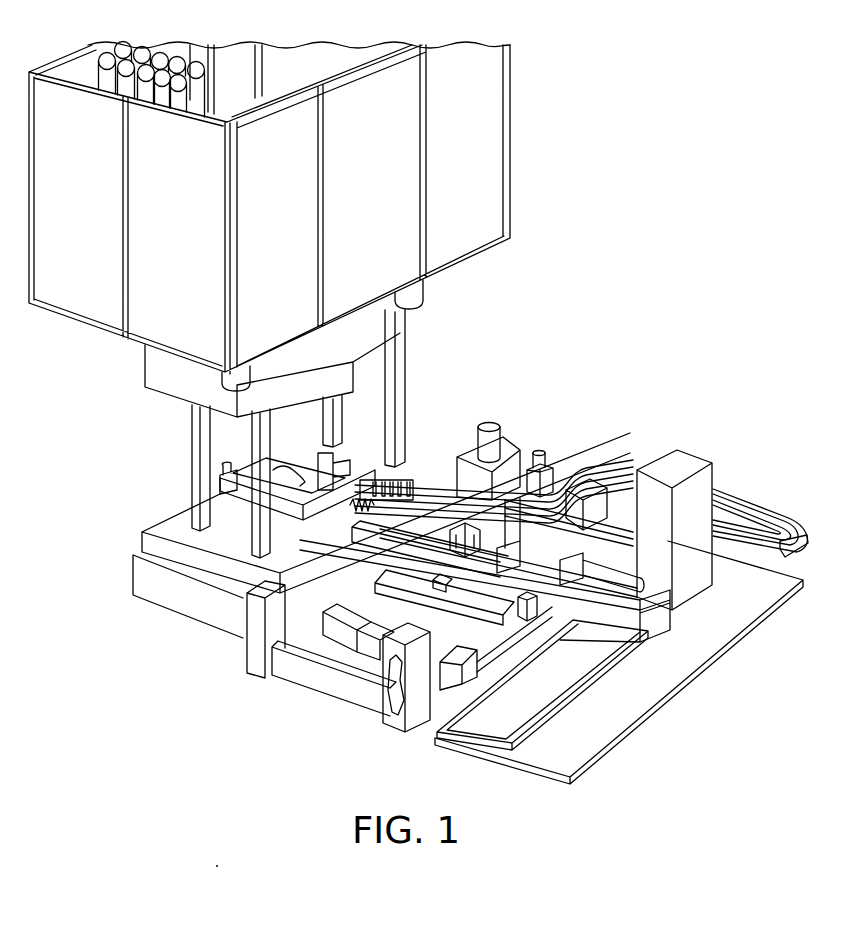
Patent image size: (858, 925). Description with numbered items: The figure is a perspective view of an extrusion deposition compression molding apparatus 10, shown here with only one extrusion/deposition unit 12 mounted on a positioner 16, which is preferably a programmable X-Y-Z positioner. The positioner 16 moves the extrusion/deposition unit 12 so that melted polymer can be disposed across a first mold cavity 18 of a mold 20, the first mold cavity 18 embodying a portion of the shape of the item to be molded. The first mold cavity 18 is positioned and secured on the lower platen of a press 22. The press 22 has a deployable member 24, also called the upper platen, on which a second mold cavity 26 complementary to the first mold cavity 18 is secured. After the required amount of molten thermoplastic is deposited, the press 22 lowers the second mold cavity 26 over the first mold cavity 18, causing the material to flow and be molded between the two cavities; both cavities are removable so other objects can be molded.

The extrusion deposition compression molding apparatus 10 is at (651, 291).
The extrusion/deposition unit 12 is at (430, 492).
The positioner 16 is at (295, 683).
The first mold cavity 18 is at (215, 490).
The mold 20 is at (322, 450).
The press 22 is at (96, 333).
The deployable member 24 is at (347, 378).
The second mold cavity 26 is at (343, 400).